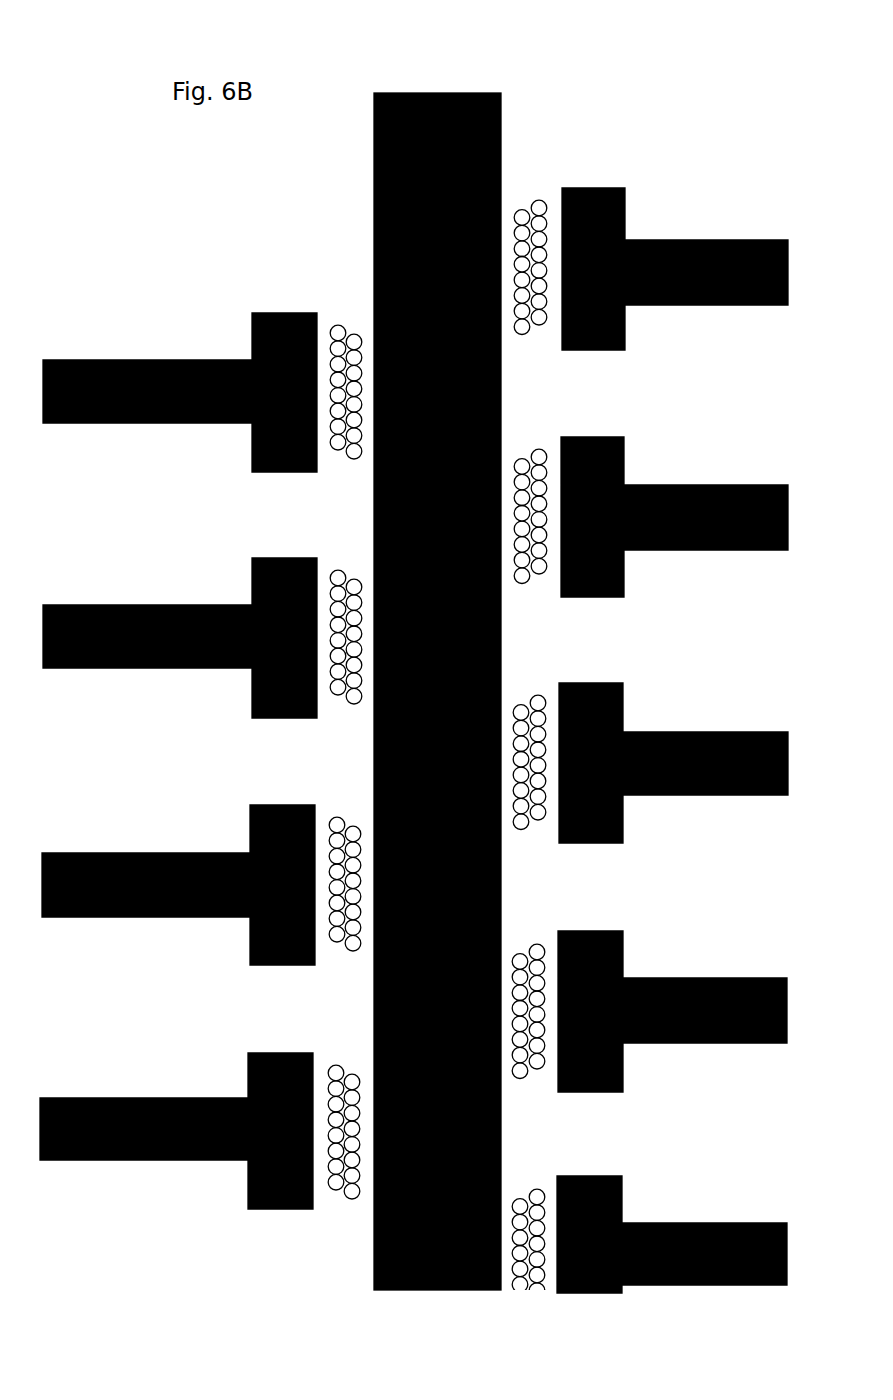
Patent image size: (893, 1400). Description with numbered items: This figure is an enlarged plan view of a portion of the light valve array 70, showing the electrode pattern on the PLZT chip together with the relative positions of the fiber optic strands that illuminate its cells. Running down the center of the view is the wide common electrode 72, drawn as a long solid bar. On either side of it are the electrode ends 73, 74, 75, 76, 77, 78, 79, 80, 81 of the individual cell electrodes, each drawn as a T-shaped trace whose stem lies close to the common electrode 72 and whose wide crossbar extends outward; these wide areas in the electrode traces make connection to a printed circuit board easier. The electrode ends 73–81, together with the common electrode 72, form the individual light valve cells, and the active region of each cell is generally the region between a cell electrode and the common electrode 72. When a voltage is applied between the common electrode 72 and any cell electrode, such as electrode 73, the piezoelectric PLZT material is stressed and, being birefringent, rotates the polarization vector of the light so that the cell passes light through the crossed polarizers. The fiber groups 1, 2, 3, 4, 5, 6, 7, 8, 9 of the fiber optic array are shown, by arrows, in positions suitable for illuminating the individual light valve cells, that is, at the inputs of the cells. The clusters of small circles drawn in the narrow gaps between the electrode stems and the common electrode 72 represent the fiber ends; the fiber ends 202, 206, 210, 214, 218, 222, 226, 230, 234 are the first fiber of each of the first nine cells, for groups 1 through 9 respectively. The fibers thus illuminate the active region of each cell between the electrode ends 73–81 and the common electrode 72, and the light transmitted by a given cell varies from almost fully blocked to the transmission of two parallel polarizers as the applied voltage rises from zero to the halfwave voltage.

The light valve array 70 is at (679, 112).
The common electrode 72 is at (434, 88).
The electrode end 73 is at (625, 190).
The electrode end 74 is at (252, 314).
The electrode end 75 is at (624, 438).
The electrode end 76 is at (252, 559).
The electrode end 77 is at (623, 684).
The electrode end 78 is at (250, 806).
The electrode end 79 is at (623, 932).
The electrode end 80 is at (248, 1054).
The electrode end 81 is at (622, 1177).
The group of fiber optic array 1 is at (527, 274).
The group of fiber optic array 2 is at (344, 384).
The group of fiber optic array 3 is at (536, 509).
The group of fiber optic array 4 is at (347, 631).
The group of fiber optic array 5 is at (531, 744).
The group of fiber optic array 6 is at (345, 879).
The group of fiber optic array 7 is at (532, 1004).
The group of fiber optic array 8 is at (345, 1124).
The group of fiber optic array 9 is at (530, 1254).
The fiber end 202 is at (552, 206).
The fiber end 206 is at (350, 330).
The fiber end 210 is at (552, 454).
The fiber end 214 is at (352, 578).
The fiber end 218 is at (548, 700).
The fiber end 222 is at (350, 823).
The fiber end 226 is at (548, 948).
The fiber end 230 is at (350, 1073).
The fiber end 234 is at (544, 1190).